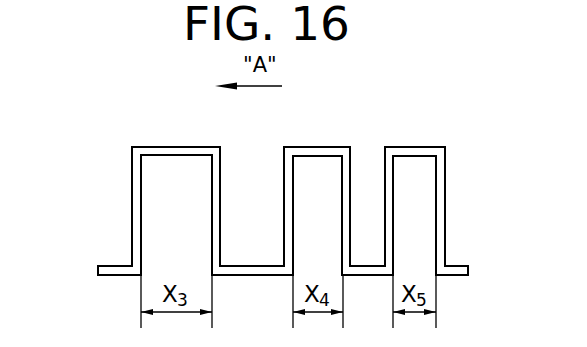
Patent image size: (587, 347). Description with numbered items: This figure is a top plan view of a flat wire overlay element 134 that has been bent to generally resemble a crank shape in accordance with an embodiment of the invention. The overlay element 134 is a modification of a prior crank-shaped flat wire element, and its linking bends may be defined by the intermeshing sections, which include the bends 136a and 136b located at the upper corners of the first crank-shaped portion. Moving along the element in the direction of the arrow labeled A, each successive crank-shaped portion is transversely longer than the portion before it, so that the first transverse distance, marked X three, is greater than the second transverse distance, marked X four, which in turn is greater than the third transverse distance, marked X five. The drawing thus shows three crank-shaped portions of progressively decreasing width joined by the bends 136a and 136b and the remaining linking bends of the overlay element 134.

The overlay element 134 is at (398, 83).
The bend 136a is at (132, 138).
The bend 136b is at (221, 142).